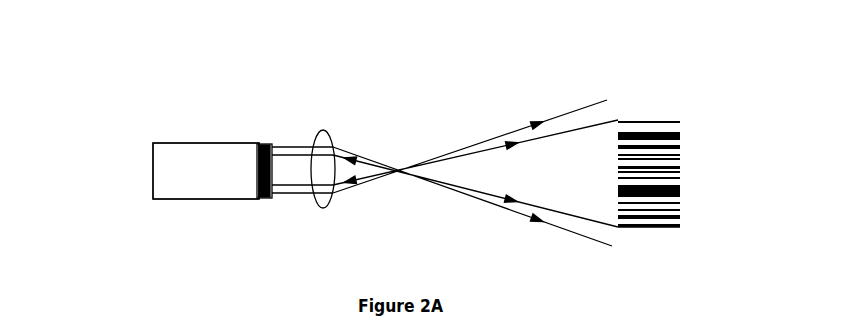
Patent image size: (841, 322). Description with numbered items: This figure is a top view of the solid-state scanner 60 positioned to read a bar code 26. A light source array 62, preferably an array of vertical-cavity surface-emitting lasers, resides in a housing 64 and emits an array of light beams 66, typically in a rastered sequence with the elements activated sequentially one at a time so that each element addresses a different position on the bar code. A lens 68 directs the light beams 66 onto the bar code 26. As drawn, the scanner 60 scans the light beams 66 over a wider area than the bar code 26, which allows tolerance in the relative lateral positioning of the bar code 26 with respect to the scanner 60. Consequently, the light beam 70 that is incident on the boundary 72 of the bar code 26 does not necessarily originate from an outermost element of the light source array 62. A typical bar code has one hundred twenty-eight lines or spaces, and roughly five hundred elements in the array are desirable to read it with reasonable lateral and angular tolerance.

The solid-state scanner 60 is at (128, 80).
The housing 64 is at (183, 157).
The light source array 62 is at (258, 146).
The lens 68 is at (321, 133).
The light beams 66 is at (293, 187).
The light beam 70 is at (478, 190).
The bar code 26 is at (682, 135).
The boundary 72 is at (620, 227).